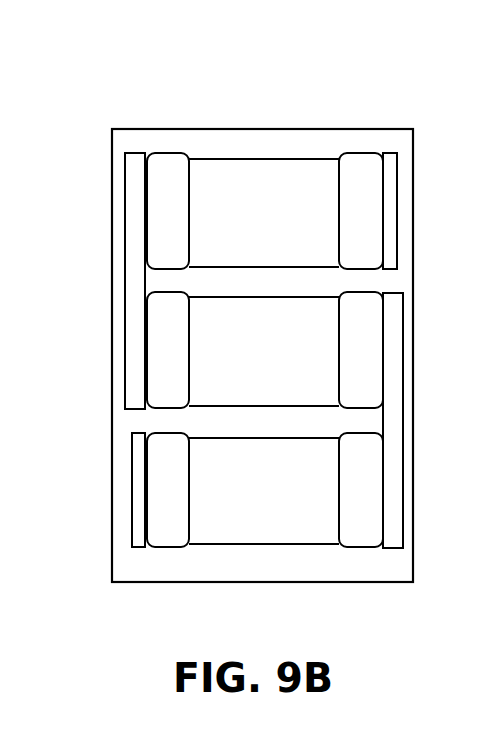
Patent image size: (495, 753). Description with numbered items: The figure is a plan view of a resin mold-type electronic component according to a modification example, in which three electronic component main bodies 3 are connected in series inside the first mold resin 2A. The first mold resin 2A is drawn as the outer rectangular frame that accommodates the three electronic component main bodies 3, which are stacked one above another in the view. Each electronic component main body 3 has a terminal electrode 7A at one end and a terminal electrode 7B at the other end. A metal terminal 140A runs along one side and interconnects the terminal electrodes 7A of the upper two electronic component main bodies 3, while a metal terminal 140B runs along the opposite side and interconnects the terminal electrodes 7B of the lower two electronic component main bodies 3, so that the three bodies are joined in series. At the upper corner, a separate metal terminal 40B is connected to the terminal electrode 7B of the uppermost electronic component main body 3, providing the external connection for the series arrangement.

The first mold resin 2A is at (227, 129).
The metal terminal 140A is at (133, 165).
The terminal electrode 7A is at (170, 167).
The electronic component main body 3 is at (278, 182).
The terminal electrode 7B is at (367, 168).
The metal terminal 40B is at (391, 162).
The metal terminal 140B is at (395, 533).